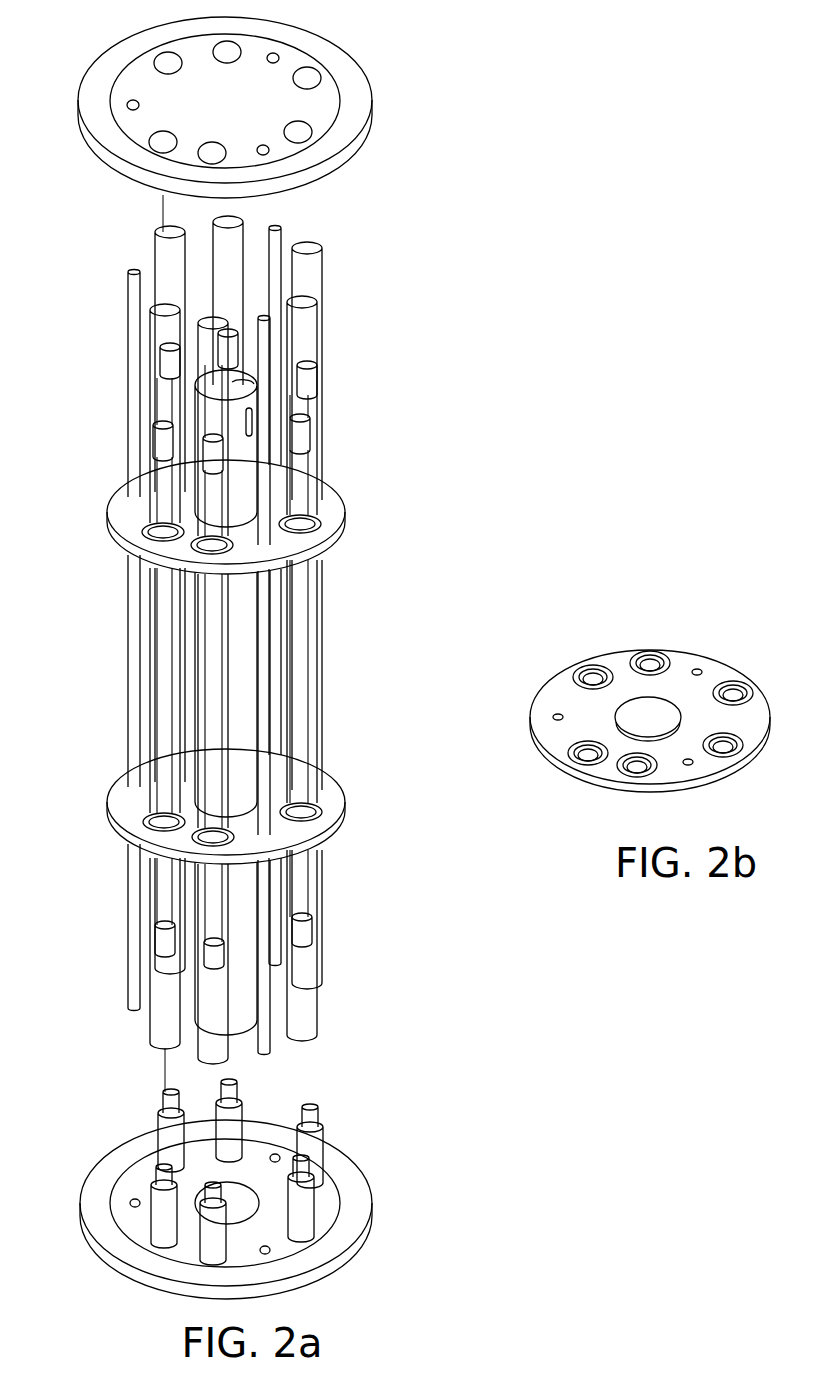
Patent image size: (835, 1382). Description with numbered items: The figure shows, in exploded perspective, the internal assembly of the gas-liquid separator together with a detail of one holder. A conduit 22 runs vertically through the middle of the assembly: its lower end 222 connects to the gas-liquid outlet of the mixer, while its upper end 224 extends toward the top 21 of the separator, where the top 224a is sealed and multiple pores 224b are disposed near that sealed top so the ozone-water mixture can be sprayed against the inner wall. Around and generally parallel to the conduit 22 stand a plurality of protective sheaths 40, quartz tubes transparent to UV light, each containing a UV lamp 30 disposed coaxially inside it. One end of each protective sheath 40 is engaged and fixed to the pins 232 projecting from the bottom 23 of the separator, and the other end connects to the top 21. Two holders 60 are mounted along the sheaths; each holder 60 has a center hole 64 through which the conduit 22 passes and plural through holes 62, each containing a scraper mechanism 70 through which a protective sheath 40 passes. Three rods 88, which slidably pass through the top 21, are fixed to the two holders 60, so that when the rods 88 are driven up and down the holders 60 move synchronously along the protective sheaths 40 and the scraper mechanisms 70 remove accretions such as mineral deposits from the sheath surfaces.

In FIG. 2a, the top 21 is at (363, 142).
In FIG. 2a, the rods 88 is at (133, 295).
In FIG. 2a, the protective sheaths 40 is at (152, 340).
In FIG. 2a, the UV lamps 30 is at (158, 477).
In FIG. 2a, the holders 60 is at (108, 520).
In FIG. 2b, the holders 60 is at (543, 687).
In FIG. 2a, the scraper mechanism 70 is at (320, 533).
In FIG. 2b, the scraper mechanism 70 is at (747, 683).
In FIG. 2a, the conduit 22 is at (245, 475).
In FIG. 2a, the upper end 224 is at (370, 404).
In FIG. 2a, the top 224a is at (242, 383).
In FIG. 2a, the pores 224b is at (255, 427).
In FIG. 2a, the lower end 222 is at (233, 1027).
In FIG. 2a, the pins 232 is at (310, 1142).
In FIG. 2a, the bottom 23 is at (362, 1202).
In FIG. 2b, the center hole 64 is at (633, 713).
In FIG. 2b, the through holes 62 is at (727, 683).